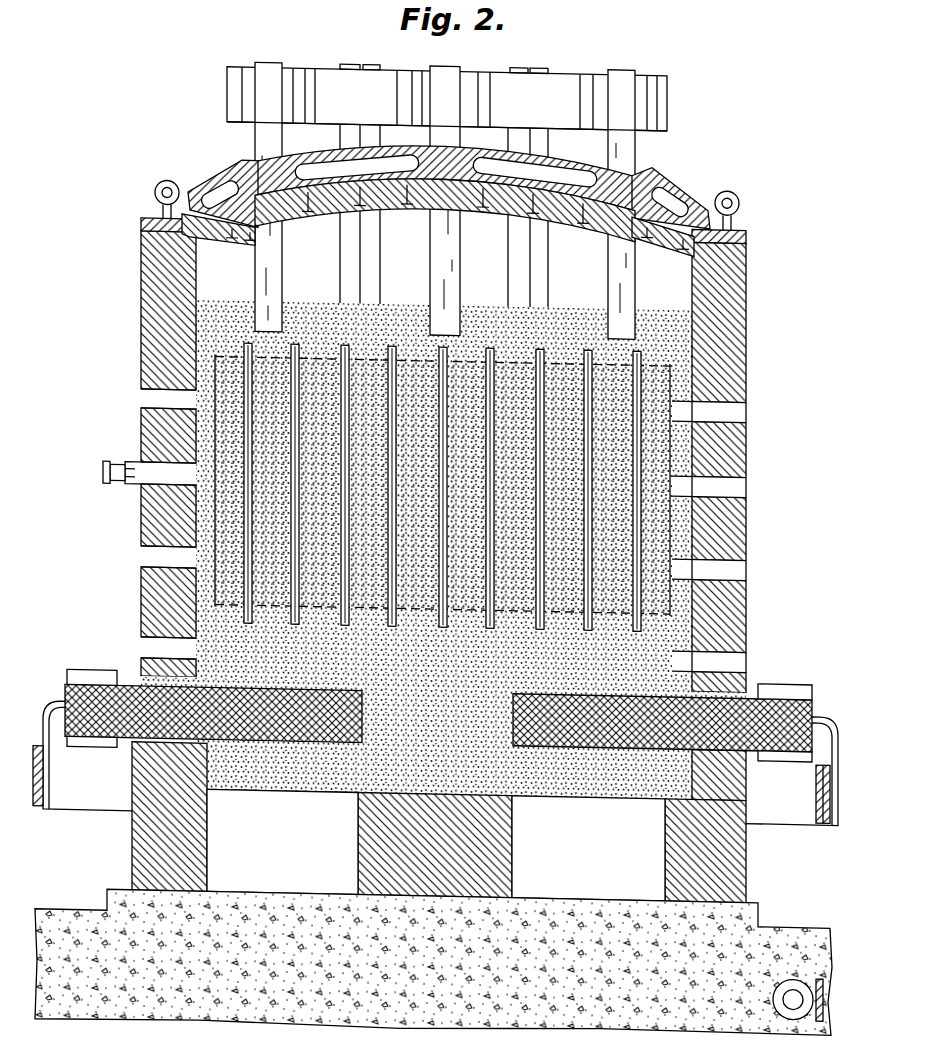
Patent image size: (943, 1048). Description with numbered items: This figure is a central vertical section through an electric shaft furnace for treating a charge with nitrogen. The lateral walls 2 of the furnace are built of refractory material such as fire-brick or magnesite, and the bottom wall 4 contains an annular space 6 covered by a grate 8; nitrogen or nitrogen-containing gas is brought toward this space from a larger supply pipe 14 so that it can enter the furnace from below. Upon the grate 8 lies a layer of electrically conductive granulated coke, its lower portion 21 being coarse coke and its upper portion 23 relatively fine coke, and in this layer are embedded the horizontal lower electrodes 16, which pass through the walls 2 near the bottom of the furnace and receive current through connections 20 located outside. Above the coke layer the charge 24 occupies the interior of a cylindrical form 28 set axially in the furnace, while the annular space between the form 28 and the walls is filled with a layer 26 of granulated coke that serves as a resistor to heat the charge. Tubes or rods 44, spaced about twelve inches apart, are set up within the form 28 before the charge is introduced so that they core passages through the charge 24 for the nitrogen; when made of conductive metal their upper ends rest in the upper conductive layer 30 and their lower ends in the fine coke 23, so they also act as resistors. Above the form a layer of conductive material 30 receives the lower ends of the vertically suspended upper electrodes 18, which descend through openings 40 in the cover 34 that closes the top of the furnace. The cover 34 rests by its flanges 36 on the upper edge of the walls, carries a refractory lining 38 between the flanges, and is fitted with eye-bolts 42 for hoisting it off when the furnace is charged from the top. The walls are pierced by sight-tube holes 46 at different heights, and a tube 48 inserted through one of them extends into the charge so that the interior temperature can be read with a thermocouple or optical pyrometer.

The walls 2 is at (141, 266).
The bottom wall 4 is at (380, 843).
The annular space 6 is at (210, 832).
The grate 8 is at (302, 788).
The supply pipe 14 is at (818, 925).
The lower electrodes 16 is at (135, 683).
The upper electrodes 18 is at (256, 265).
The connections 20 is at (72, 800).
The lower portion of the layer 21 is at (195, 762).
The upper portion of the layer 23 is at (196, 612).
The charge 24 is at (620, 508).
The layer 26 is at (700, 430).
The cylindrical form 28 is at (196, 436).
The layer of electrically conductive material 30 is at (312, 290).
The roof arch 34 is at (585, 165).
The flanges 36 is at (748, 222).
The lining 38 is at (590, 212).
The openings 40 is at (247, 166).
The eye-bolts 42 is at (154, 189).
The tubes or rods 44 is at (350, 337).
The sight-tube holes 46 is at (141, 395).
The tube 48 is at (115, 478).